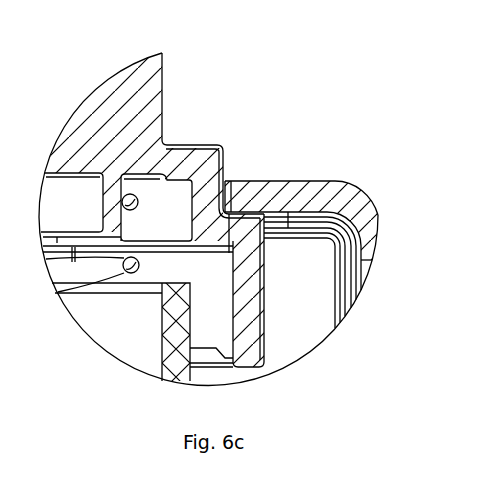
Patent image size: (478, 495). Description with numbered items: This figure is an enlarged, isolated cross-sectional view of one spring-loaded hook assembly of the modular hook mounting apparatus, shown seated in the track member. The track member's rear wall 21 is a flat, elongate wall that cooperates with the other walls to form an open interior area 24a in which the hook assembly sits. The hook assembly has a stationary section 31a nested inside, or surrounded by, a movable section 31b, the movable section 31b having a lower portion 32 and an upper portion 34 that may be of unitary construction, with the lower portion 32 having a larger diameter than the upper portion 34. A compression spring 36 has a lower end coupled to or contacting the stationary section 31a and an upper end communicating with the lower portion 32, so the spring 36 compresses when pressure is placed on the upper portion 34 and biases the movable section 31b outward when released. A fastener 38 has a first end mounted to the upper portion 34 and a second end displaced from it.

The fastener 38 is at (152, 102).
The upper portion 34 is at (208, 160).
The rear wall 21 is at (317, 179).
The movable section 31b is at (272, 268).
The lower portion 32 is at (253, 313).
The compression spring 36 is at (108, 333).
The open interior area 24a is at (198, 305).
The stationary section 31a is at (206, 351).